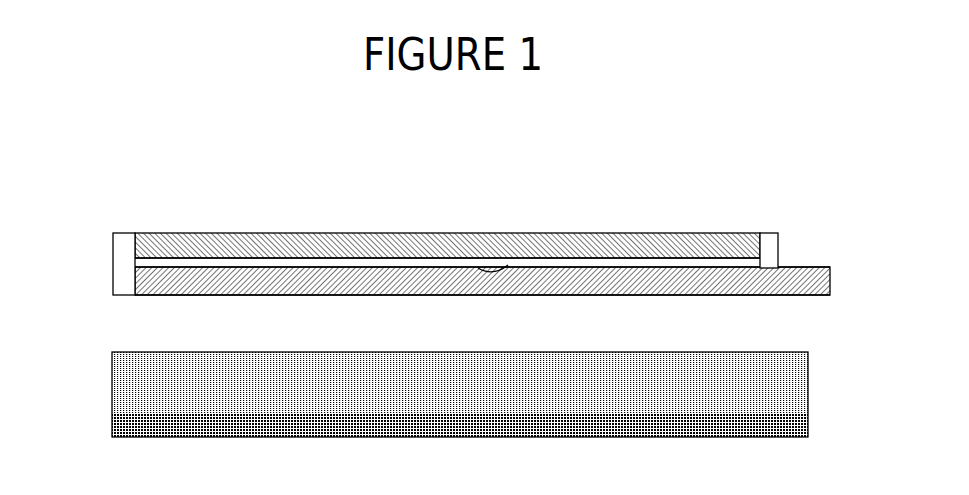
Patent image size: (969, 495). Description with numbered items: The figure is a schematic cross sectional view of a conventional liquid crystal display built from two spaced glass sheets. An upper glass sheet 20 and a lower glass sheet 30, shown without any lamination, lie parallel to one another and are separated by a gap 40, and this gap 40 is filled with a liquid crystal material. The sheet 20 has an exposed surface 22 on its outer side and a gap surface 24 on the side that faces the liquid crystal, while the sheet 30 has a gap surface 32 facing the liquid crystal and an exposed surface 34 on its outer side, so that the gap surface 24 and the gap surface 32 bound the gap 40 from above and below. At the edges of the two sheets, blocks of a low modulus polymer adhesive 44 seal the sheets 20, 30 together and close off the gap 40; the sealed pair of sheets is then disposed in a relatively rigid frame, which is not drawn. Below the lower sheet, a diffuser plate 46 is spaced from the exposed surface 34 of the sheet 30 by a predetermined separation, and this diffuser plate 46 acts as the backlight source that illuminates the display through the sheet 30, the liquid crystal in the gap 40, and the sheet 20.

The glass sheet 20 is at (176, 227).
The exposed surface 22 is at (566, 233).
The gap surface 24 is at (692, 266).
The glass sheet 30 is at (148, 297).
The gap surface 32 is at (718, 266).
The exposed surface 34 is at (790, 296).
The gap 40 is at (480, 268).
The low modulus polymer adhesive 44 is at (120, 245).
The diffuser plate 46 is at (825, 353).